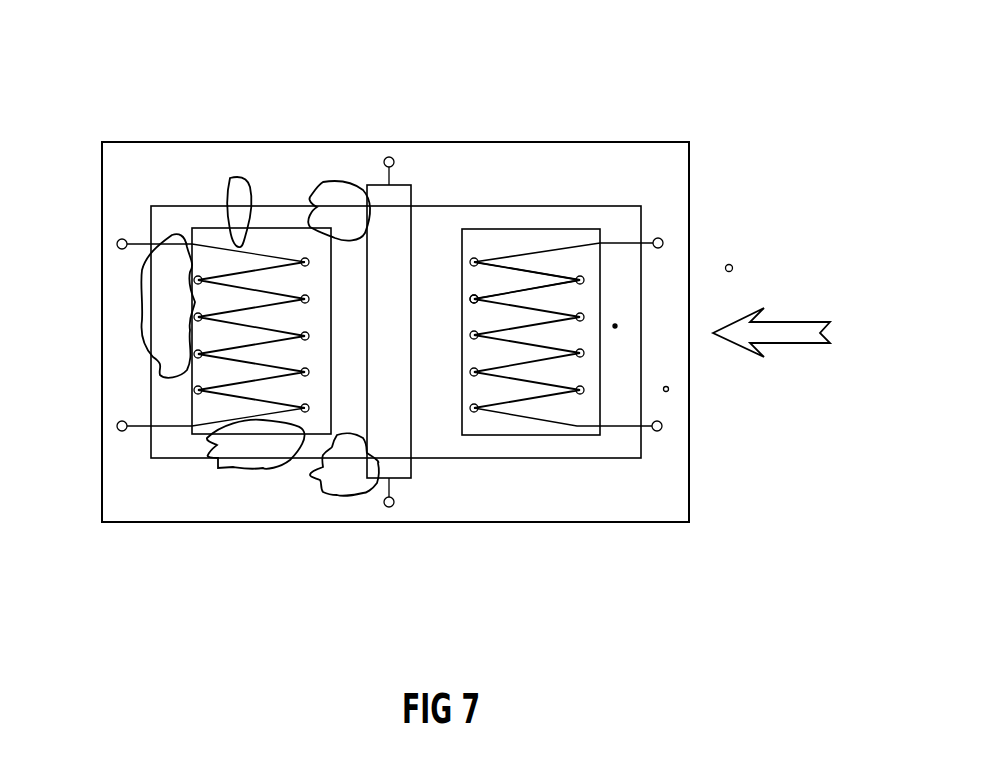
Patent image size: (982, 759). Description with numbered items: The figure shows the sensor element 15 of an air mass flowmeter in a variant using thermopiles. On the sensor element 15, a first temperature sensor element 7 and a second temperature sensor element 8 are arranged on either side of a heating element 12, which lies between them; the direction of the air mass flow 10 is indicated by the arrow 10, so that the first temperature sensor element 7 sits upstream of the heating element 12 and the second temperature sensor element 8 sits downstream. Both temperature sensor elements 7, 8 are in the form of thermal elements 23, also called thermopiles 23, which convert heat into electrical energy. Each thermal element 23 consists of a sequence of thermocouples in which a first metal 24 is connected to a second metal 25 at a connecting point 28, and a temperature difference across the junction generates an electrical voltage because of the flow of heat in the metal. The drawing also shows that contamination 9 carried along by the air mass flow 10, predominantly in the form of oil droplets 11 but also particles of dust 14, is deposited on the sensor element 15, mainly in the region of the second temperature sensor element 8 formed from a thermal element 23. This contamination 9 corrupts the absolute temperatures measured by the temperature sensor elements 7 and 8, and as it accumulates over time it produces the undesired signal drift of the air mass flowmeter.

The first temperature sensor element 7 is at (505, 245).
The second temperature sensor element 8 is at (218, 413).
The contamination 9 is at (183, 237).
The air mass flow 10 is at (773, 337).
The oil droplets 11 is at (346, 472).
The heating element 12 is at (398, 205).
The particles of dust 14 is at (730, 264).
The sensor element 15 is at (674, 155).
The thermal element 23 is at (194, 390).
The first metal 24 is at (497, 295).
The second metal 25 is at (495, 302).
The connecting point 28 is at (472, 300).